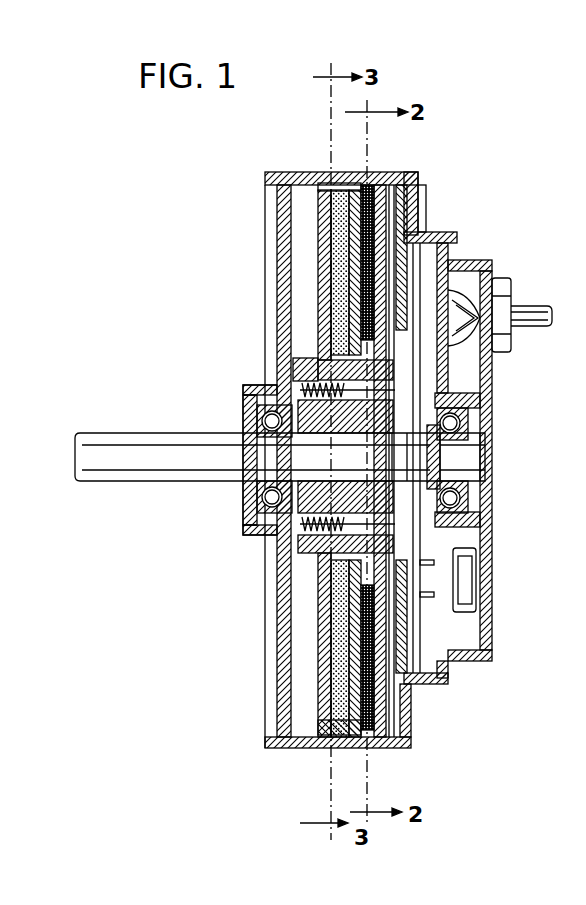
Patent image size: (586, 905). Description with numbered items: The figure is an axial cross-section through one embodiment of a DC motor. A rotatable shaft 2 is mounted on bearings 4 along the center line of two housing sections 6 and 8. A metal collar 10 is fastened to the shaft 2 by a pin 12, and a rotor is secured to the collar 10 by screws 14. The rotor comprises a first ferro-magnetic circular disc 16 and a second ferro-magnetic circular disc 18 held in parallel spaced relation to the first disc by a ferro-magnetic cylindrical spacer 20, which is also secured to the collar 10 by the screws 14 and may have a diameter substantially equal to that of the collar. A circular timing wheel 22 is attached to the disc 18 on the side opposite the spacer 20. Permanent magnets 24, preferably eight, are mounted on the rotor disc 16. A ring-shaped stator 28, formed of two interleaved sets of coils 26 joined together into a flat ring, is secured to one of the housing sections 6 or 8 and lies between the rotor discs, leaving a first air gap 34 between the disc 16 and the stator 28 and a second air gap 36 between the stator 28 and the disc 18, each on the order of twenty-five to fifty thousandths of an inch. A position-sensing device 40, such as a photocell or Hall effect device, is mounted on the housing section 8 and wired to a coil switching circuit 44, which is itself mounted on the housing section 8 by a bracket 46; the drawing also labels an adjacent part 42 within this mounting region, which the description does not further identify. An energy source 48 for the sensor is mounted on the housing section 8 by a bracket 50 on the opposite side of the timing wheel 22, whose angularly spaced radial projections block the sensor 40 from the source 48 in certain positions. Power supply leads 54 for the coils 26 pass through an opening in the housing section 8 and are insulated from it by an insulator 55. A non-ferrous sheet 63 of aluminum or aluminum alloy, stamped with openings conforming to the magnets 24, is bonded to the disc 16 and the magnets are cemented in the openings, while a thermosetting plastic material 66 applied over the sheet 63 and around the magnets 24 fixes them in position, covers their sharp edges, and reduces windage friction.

The rotatable shaft 2 is at (115, 436).
The bearings 4 is at (250, 418).
The housing section 6 is at (288, 748).
The housing section 8 is at (411, 740).
The metal collar 10 is at (298, 552).
The pin 12 is at (470, 410).
The screws 14 is at (410, 380).
The first ferro-magnetic circular disc 16 is at (318, 594).
The second ferro-magnetic circular disc 18 is at (418, 192).
The ferro-magnetic cylindrical spacer 20 is at (293, 362).
The circular timing wheel 22 is at (448, 680).
The permanent magnets 24 is at (335, 258).
The coils 26 is at (398, 182).
The ring-shaped stator 28 is at (366, 185).
The first air gap 34 is at (330, 185).
The second air gap 36 is at (411, 712).
The position-sensing device 40 is at (460, 248).
The electronic component 42 is at (478, 576).
The coil switching circuit 44 is at (474, 590).
The bracket 46 is at (492, 651).
The energy source 48 is at (440, 236).
The bracket 50 is at (426, 212).
The power supply leads 54 is at (535, 315).
The insulator 55 is at (502, 300).
The sheet 63 is at (318, 716).
The thermosetting plastic material 66 is at (318, 335).